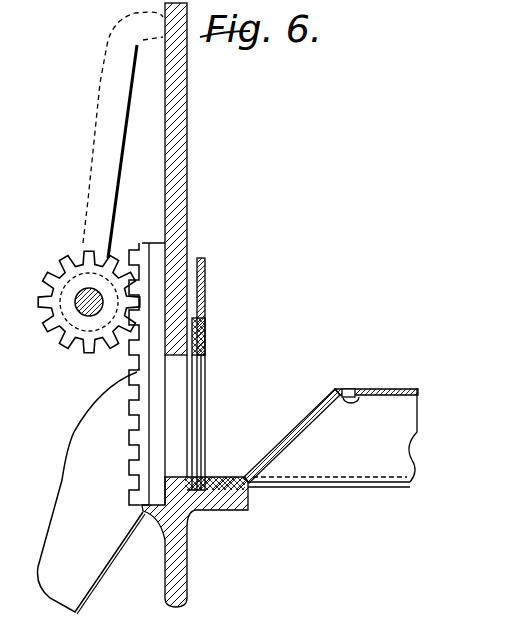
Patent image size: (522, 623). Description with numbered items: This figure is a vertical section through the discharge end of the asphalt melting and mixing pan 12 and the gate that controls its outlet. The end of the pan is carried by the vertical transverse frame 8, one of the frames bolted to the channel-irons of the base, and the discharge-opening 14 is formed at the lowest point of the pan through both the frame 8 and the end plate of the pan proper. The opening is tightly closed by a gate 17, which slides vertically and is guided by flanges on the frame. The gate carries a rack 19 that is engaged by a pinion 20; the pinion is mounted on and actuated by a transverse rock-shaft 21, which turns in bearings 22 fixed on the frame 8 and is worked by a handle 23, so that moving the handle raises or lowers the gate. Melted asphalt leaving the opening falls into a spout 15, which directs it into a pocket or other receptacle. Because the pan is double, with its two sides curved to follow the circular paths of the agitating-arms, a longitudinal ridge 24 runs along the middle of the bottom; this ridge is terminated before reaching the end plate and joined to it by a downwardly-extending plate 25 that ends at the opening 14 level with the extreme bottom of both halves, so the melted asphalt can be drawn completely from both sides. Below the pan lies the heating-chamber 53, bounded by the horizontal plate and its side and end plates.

The vertical transverse frame 8 is at (190, 240).
The asphalt melting and mixing pan 12 is at (206, 303).
The discharge-opening 14 is at (322, 435).
The spout 15 is at (92, 493).
The gate 17 is at (160, 379).
The rack 19 is at (128, 430).
The pinion 20 is at (45, 327).
The rock-shaft 21 is at (76, 298).
The bearings 22 is at (127, 337).
The handle 23 is at (97, 170).
The longitudinal ridge 24 is at (385, 390).
The downwardly-extending plate 25 is at (290, 440).
The heating-chamber 53 is at (276, 542).